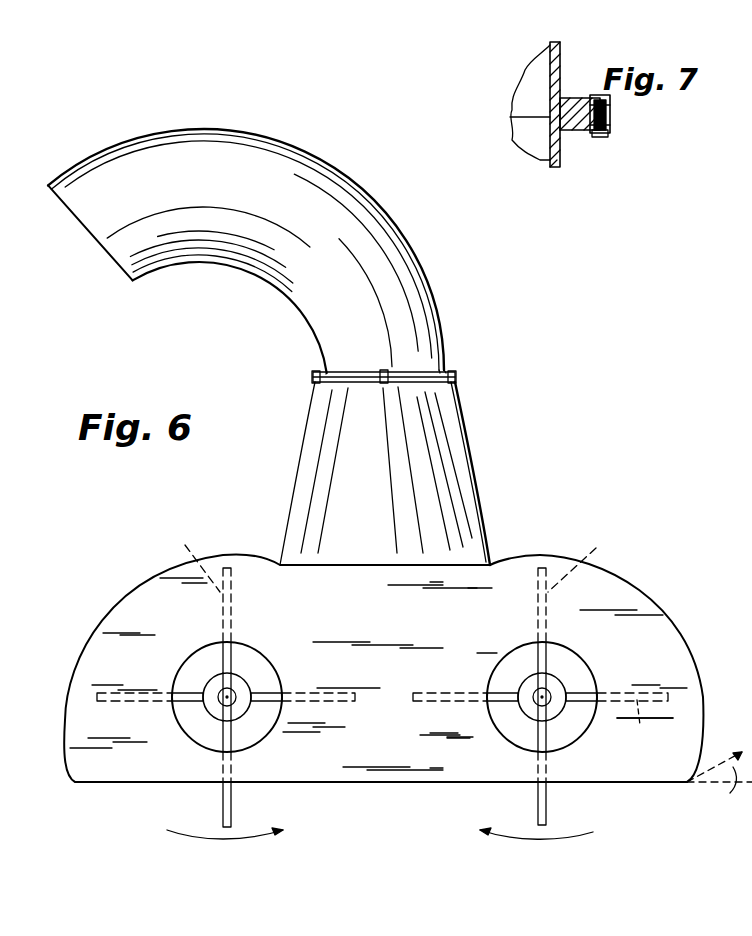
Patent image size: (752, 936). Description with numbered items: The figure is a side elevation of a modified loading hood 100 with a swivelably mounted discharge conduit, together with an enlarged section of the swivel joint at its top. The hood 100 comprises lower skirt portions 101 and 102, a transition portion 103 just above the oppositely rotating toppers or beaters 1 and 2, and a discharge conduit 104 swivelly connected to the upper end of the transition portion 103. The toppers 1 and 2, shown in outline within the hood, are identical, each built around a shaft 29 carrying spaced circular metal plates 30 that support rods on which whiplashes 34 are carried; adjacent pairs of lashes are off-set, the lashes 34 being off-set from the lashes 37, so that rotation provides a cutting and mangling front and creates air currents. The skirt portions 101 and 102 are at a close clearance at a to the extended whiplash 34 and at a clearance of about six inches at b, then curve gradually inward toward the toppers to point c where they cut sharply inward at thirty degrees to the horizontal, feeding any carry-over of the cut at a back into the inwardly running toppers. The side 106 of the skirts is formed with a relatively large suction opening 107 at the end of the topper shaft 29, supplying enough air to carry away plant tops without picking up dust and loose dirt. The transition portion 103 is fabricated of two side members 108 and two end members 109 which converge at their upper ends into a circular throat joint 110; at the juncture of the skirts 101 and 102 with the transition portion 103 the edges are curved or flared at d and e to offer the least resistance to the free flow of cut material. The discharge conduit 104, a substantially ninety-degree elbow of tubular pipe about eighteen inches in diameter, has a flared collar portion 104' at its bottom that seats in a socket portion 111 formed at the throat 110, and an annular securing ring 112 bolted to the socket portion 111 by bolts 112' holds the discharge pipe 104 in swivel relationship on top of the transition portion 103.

In FIG. 6, the revolvable topper 1 is at (578, 560).
In FIG. 6, the revolvable topper 2 is at (220, 592).
In FIG. 6, the shaft 29 is at (538, 713).
In FIG. 6, the circular metal plate 30 is at (560, 705).
In FIG. 6, the whiplash 34 is at (240, 580).
In FIG. 6, the whiplash 37 is at (640, 730).
In FIG. 6, the modified hood 100 is at (503, 555).
In FIG. 6, the lower skirt portion 101 is at (648, 590).
In FIG. 6, the lower skirt portion 102 is at (133, 585).
In FIG. 6, the transition portion 103 is at (462, 413).
In FIG. 6, the discharge conduit 104 is at (247, 251).
In FIG. 7, the flared collar portion 104' is at (580, 87).
In FIG. 6, the side of skirt 106 is at (595, 592).
In FIG. 6, the suction opening 107 is at (185, 668).
In FIG. 6, the side member 108 is at (428, 400).
In FIG. 6, the end member 109 is at (310, 445).
In FIG. 7, the circular throat joint 110 is at (560, 155).
In FIG. 6, the socket portion 111 is at (314, 384).
In FIG. 7, the socket portion 111 is at (610, 128).
In FIG. 6, the annular securing ring 112 is at (365, 365).
In FIG. 7, the annular securing ring 112 is at (600, 101).
In FIG. 6, the bolt 112' is at (475, 356).
In FIG. 7, the bolt 112' is at (616, 151).
In FIG. 6, the clearance point a is at (75, 690).
In FIG. 6, the clearance point b is at (75, 782).
In FIG. 6, the inward bend point c is at (719, 781).
In FIG. 6, the flared edge d is at (490, 563).
In FIG. 6, the flared edge e is at (280, 565).